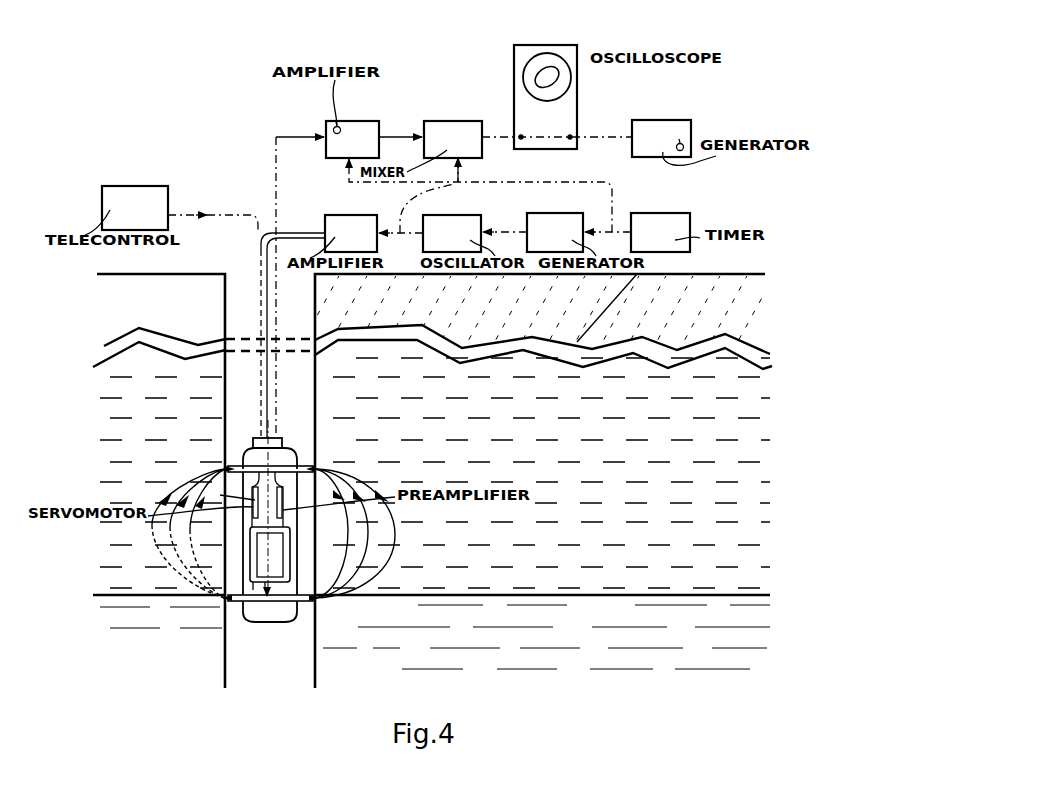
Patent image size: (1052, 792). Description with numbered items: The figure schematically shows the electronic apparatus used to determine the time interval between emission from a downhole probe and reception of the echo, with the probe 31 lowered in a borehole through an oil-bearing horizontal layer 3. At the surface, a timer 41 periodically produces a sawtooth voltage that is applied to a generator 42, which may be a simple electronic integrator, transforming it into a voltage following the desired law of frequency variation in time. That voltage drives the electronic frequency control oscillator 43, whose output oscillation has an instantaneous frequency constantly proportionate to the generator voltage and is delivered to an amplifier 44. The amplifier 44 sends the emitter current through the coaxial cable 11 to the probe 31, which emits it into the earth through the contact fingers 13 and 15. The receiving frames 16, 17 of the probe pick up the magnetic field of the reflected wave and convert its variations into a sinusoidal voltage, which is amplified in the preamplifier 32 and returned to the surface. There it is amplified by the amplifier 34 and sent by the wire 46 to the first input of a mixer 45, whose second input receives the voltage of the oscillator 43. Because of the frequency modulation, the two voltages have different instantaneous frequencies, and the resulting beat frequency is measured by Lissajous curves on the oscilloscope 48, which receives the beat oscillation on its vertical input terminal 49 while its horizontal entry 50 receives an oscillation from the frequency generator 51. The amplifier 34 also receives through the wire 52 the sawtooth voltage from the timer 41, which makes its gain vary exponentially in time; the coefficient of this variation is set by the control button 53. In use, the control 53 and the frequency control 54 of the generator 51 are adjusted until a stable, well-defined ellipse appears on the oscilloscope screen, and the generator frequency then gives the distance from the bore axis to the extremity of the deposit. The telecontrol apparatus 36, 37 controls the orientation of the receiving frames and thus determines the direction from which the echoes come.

The horizontal layer 3 is at (434, 471).
The coaxial cable 11 is at (287, 233).
The contact finger 13 is at (291, 464).
The contact finger 15 is at (286, 608).
The frame 16 is at (288, 553).
The frame 17 is at (314, 553).
The probe 31 is at (297, 450).
The preamplifier 32 is at (283, 502).
The amplifier 34 is at (360, 130).
The telecontrol apparatus 36 is at (127, 200).
The orientation control apparatus 37 is at (205, 212).
The timer 41 is at (660, 226).
The generator 42 is at (548, 226).
The electronic frequency control oscillator 43 is at (450, 230).
The amplifier 44 is at (343, 225).
The mixer 45 is at (440, 130).
The wire 46 is at (395, 137).
The oscilloscope 48 is at (568, 50).
The vertical input terminal 49 is at (520, 136).
The horizontal entry 50 is at (572, 136).
The frequency generator 51 is at (650, 130).
The wire 52 is at (534, 183).
The control button 53 is at (340, 128).
The frequency control 54 is at (690, 143).